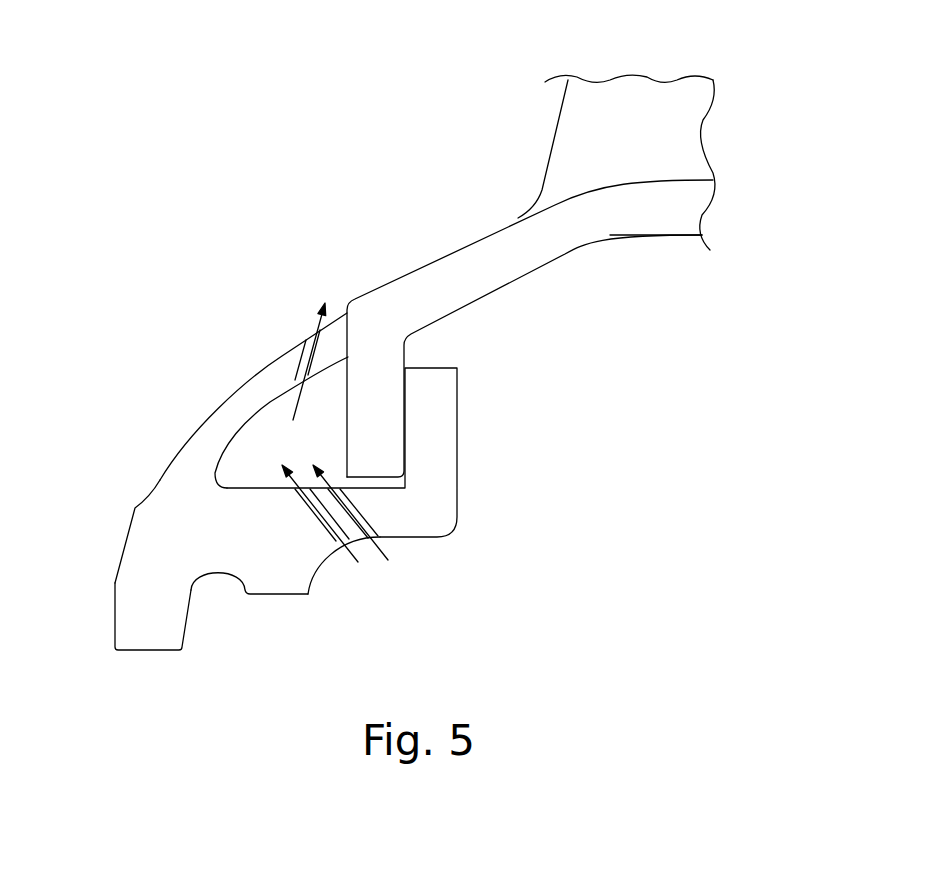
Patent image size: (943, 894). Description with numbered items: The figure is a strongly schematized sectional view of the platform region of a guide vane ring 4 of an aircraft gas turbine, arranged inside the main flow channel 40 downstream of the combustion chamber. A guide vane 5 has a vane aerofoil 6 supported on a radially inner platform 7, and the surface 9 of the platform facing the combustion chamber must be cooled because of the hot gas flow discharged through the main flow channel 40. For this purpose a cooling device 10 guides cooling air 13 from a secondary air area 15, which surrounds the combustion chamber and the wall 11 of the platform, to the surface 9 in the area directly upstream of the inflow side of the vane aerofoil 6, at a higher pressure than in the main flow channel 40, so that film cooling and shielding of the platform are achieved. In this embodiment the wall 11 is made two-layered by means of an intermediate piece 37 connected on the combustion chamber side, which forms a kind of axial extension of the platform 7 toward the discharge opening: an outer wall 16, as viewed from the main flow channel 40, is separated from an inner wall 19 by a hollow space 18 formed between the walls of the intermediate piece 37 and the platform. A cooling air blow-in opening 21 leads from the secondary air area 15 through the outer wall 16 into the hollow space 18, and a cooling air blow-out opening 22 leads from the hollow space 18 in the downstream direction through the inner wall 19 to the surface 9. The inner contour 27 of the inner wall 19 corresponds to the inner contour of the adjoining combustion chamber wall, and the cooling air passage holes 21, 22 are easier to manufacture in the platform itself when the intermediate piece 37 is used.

The main flow channel 40 is at (295, 95).
The guide vane ring 4 is at (724, 90).
The guide vane 5 is at (703, 152).
The vane aerofoil 6 is at (610, 100).
The radially inner platform 7 is at (620, 223).
The surface of the platform 9 is at (500, 227).
The wall of the platform 11 is at (560, 266).
The cooling device 10 is at (252, 499).
The cooling air 13 is at (313, 320).
The secondary air area 15 is at (428, 609).
The outer wall 16 is at (277, 533).
The hollow space 18 is at (230, 474).
The inner wall 19 is at (223, 418).
The cooling air blow-in opening 21 is at (328, 540).
The cooling air blow-out opening 22 is at (302, 352).
The inner contour of the inner wall 27 is at (152, 472).
The intermediate piece 37 is at (257, 583).